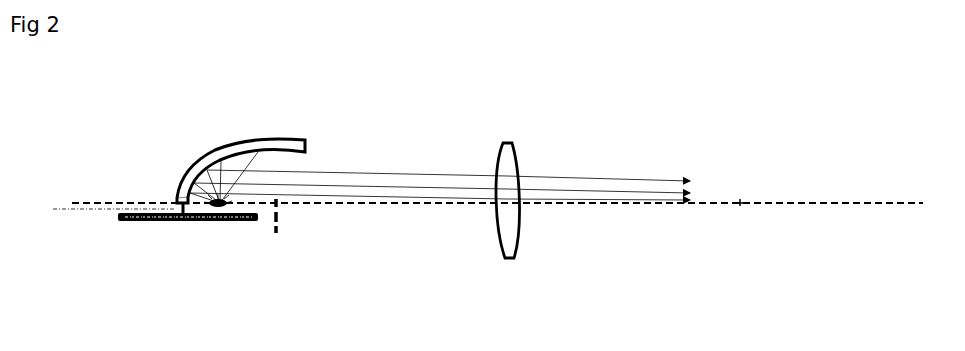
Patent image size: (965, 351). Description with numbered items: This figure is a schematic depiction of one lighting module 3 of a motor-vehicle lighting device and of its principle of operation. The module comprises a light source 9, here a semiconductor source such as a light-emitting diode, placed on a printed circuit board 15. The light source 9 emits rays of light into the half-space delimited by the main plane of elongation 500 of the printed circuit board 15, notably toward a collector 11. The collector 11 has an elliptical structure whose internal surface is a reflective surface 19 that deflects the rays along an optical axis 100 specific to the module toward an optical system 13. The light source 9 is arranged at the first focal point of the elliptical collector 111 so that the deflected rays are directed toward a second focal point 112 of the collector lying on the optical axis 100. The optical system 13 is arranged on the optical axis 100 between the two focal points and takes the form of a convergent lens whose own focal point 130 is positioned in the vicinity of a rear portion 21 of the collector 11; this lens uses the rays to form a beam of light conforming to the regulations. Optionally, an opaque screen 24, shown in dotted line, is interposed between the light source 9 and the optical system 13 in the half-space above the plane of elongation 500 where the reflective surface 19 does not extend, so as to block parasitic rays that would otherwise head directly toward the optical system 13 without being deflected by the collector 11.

The lighting module 3 is at (272, 304).
The light source 9 is at (236, 203).
The collector 11 is at (222, 172).
The elliptical collector 111 is at (232, 151).
The optical system 13 is at (510, 147).
The printed circuit board 15 is at (152, 216).
The reflective surface 19 is at (287, 158).
The rear portion 21 is at (171, 197).
The opaque screen 24 is at (281, 222).
The optical axis 100 is at (822, 202).
The second focal point 112 is at (741, 202).
The focal point 130 is at (180, 223).
The main plane of elongation 500 is at (62, 209).